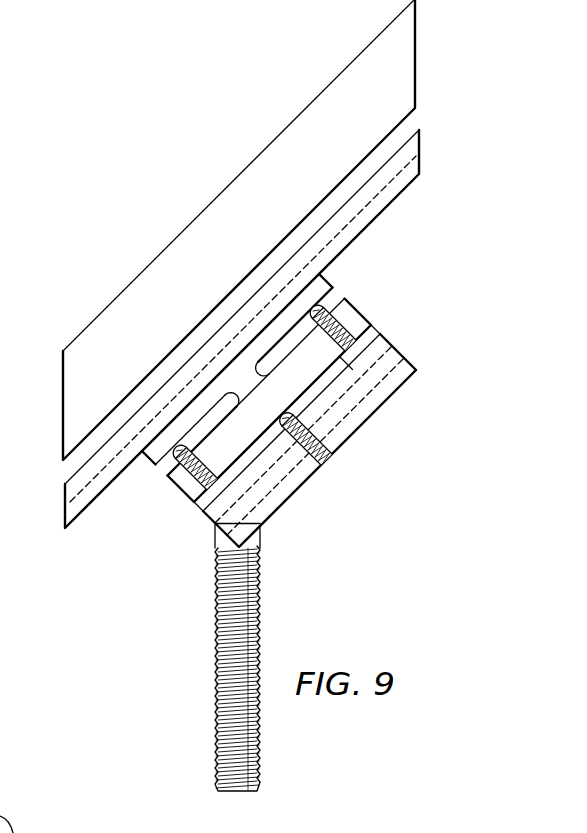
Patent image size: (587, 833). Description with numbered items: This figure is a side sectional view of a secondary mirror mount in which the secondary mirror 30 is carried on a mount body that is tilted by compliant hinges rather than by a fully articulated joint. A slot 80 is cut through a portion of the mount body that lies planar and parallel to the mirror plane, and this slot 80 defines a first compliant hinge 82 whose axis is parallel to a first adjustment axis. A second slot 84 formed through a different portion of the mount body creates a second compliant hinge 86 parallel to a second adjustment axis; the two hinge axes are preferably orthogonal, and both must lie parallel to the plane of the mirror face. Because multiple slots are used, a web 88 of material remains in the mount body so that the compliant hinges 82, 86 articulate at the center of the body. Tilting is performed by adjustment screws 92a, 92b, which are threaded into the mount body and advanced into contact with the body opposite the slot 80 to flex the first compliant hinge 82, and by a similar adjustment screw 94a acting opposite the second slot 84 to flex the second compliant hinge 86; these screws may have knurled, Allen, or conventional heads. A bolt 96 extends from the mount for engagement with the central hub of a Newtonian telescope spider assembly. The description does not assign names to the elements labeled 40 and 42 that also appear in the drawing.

The secondary mirror 30 is at (416, 37).
The rail flange 42 is at (420, 143).
The clamp assembly 40 is at (464, 222).
The slot 80 is at (298, 333).
The first compliant hinge 82 is at (237, 352).
The second slot 84 is at (318, 385).
The second compliant hinge 86 is at (390, 316).
The web 88 is at (248, 383).
The adjustment screw 92a is at (176, 486).
The adjustment screw 92b is at (347, 318).
The adjustment screw 94a is at (326, 452).
The bolt 96 is at (262, 580).